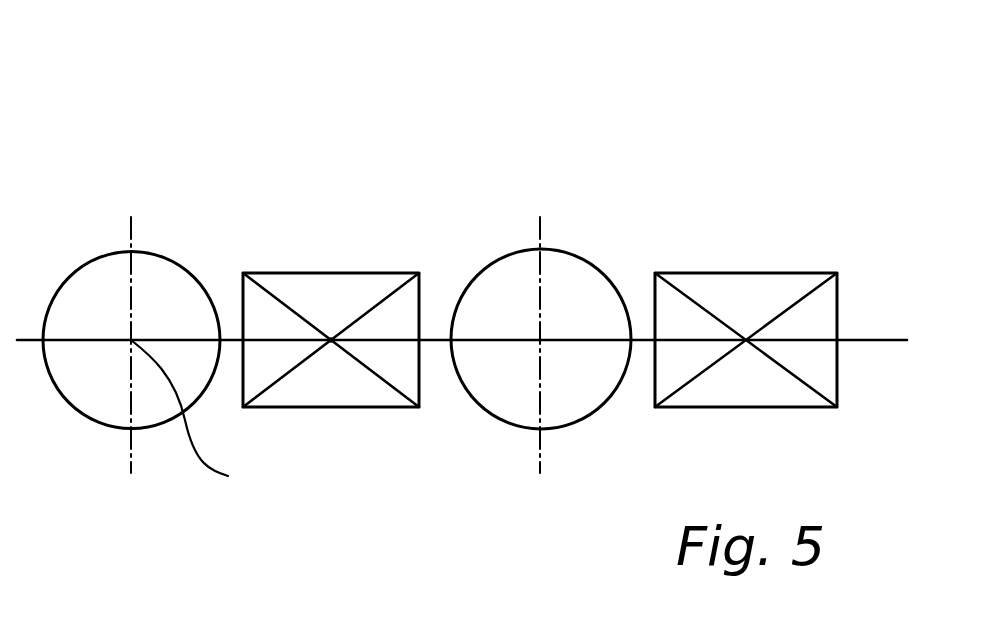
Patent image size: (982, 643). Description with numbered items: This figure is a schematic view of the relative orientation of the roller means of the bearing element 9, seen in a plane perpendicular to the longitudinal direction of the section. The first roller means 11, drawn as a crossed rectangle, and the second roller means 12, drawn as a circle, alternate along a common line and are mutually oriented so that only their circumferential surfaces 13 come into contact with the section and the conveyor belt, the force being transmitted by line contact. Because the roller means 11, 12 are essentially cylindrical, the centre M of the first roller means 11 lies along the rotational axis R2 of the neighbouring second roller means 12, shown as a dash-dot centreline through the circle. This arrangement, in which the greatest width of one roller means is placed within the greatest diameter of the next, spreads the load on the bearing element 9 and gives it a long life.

The bearing element 9 is at (173, 106).
The second roller means 12 is at (157, 268).
The rotational axis of the second roller means R2 is at (200, 420).
The first roller means 11 is at (289, 285).
The centre of roller means M is at (331, 340).
The circumferential surfaces 13 is at (560, 248).